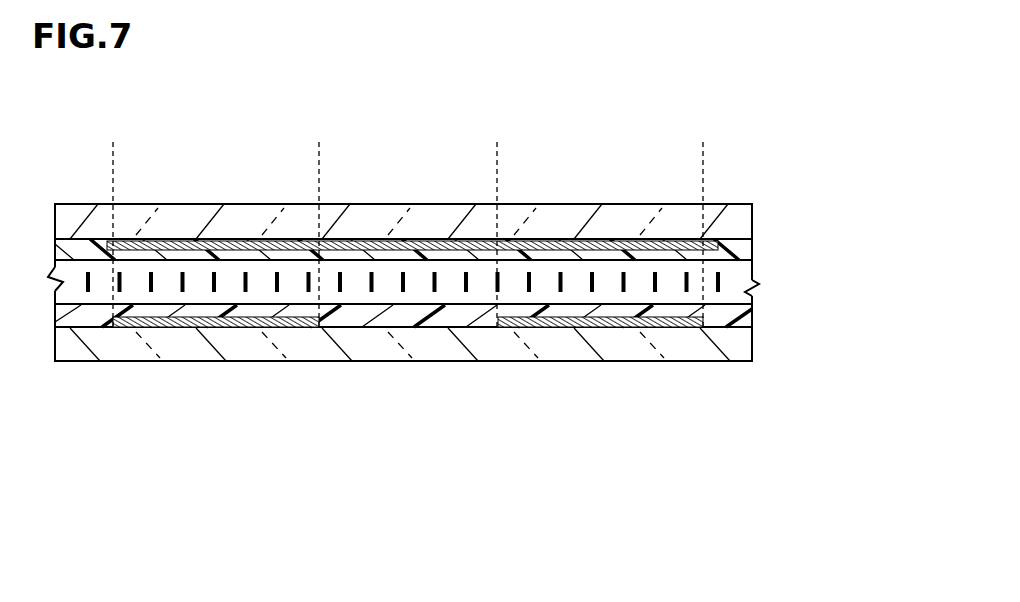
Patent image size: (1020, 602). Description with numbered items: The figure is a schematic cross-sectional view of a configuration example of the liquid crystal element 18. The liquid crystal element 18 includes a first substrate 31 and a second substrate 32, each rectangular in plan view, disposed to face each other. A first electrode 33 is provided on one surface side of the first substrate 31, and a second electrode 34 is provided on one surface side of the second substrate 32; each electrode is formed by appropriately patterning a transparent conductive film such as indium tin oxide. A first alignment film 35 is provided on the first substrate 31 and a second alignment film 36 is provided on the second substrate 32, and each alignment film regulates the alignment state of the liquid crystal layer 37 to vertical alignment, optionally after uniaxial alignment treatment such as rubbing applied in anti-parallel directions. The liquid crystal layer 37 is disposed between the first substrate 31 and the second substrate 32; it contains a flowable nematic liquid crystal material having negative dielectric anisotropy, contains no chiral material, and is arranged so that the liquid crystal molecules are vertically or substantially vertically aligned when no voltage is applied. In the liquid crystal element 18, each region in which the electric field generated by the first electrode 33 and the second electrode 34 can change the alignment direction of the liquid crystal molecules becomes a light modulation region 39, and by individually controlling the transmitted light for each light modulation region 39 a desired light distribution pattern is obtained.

The liquid crystal element 18 is at (437, 525).
The first substrate 31 is at (752, 223).
The second substrate 32 is at (752, 345).
The first electrode 33 is at (425, 240).
The second electrode 34 is at (230, 327).
The first alignment film 35 is at (752, 248).
The second alignment film 36 is at (752, 317).
The liquid crystal layer 37 is at (759, 284).
The light modulation region 39 is at (113, 142).